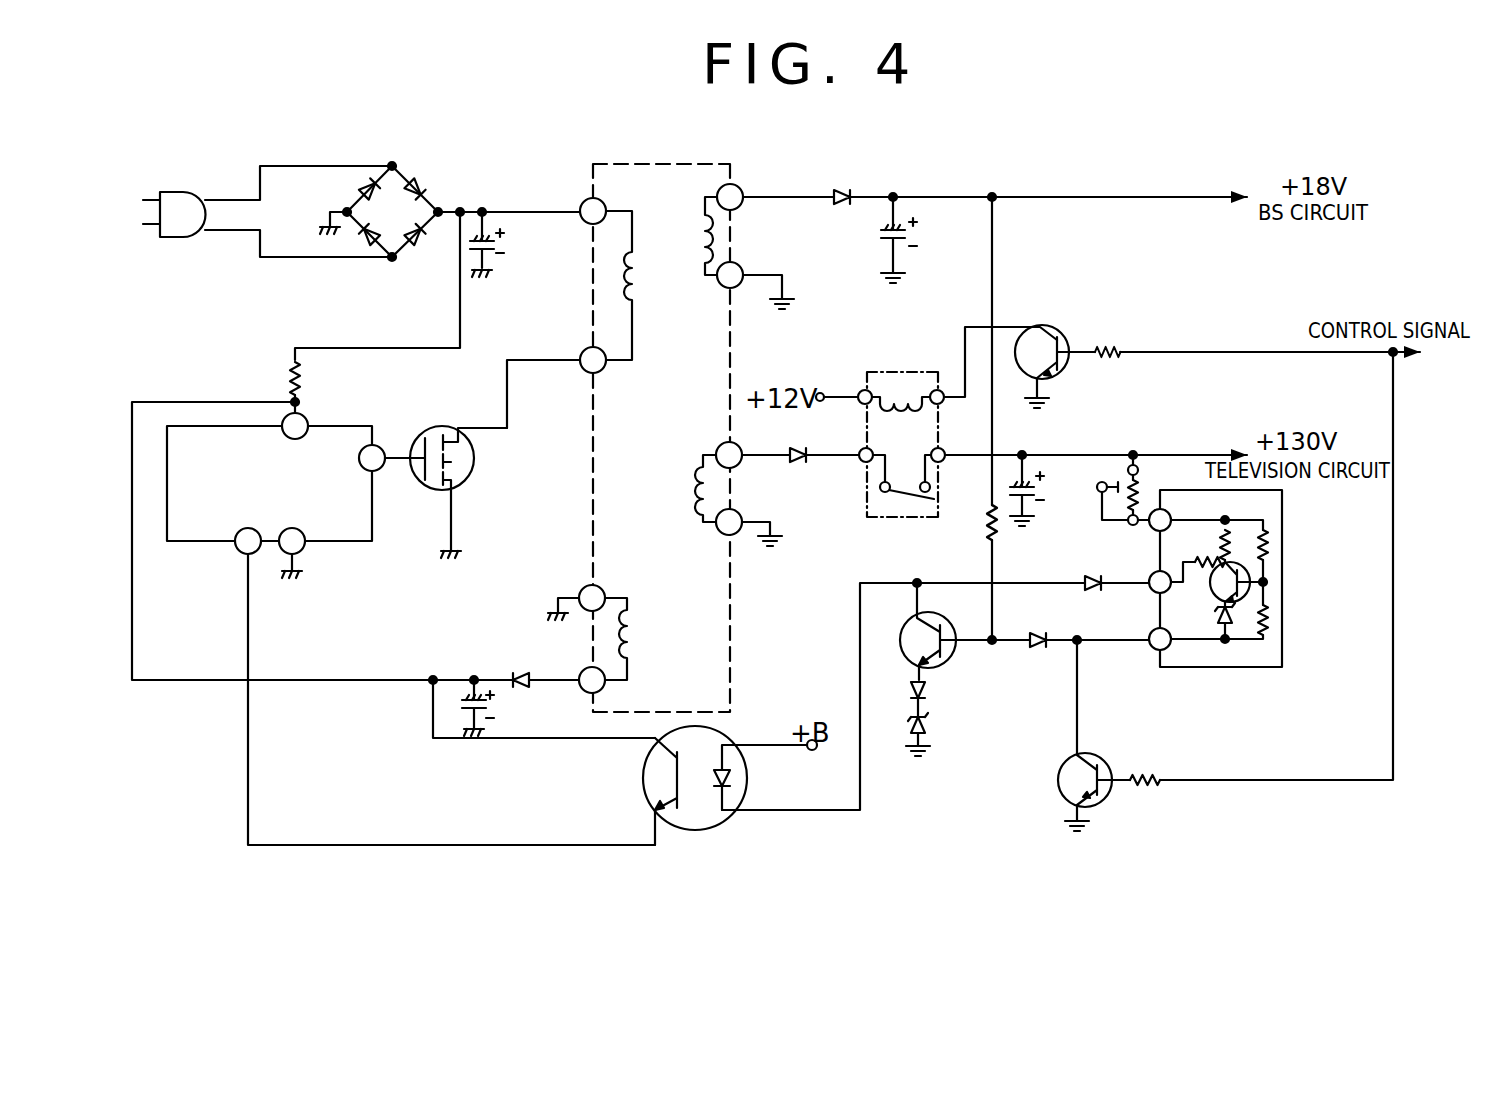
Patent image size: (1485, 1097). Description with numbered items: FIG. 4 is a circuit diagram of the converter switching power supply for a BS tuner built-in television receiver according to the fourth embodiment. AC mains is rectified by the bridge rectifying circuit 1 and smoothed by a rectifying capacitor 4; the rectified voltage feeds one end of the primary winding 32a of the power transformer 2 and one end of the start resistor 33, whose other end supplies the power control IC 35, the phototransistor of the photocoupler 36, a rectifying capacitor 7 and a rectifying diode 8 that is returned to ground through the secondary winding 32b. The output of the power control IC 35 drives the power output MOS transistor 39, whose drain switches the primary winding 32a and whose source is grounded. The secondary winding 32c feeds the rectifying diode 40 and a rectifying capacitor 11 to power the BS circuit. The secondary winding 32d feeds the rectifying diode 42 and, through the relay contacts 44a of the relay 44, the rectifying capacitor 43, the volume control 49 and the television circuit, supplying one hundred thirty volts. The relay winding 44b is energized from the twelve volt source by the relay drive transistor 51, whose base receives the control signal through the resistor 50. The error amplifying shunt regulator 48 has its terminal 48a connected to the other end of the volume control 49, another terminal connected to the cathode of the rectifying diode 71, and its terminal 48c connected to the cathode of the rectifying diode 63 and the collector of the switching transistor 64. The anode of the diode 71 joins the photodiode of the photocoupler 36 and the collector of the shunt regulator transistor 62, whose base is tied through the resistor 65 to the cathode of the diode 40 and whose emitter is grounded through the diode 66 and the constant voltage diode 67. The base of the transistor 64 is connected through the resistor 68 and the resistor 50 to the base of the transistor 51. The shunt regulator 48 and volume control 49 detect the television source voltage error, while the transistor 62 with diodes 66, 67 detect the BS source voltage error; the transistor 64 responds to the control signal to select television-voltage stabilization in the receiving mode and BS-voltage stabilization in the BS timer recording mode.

The rectifier bridge 1 is at (430, 184).
The power transformer 2 is at (670, 165).
The smoothing capacitor 4 is at (498, 239).
The capacitor 7 is at (490, 706).
The diode 8 is at (516, 672).
The capacitor 11 is at (906, 235).
The primary winding 32a is at (640, 280).
The secondary winding 32b is at (637, 650).
The secondary winding 32c is at (695, 240).
The secondary winding 32d is at (697, 485).
The start resistor 33 is at (291, 375).
The power control IC 35 is at (356, 426).
The photocoupler 36 is at (752, 722).
The power output MOS transistor 39 is at (478, 455).
The rectifying diode 40 is at (843, 188).
The rectifying diode 42 is at (798, 468).
The rectifying capacitor 43 is at (1034, 490).
The relay 44 is at (910, 368).
The relay contacts 44a is at (903, 496).
The relay winding 44b is at (897, 372).
The error amplifying shunt regulator 48 is at (1218, 601).
The terminal 48a is at (1156, 532).
The terminal 48c is at (1152, 648).
The volume control 49 is at (1140, 492).
The resistor 50 is at (1112, 346).
The relay drive transistor 51 is at (1050, 327).
The shunt regulator transistor 62 is at (910, 628).
The rectifying diode 63 is at (1050, 608).
The switching transistor 64 is at (1100, 742).
The resistor 65 is at (988, 528).
The diode 66 is at (928, 690).
The constant voltage diode 67 is at (930, 725).
The resistor 68 is at (1162, 782).
The rectifying diode 71 is at (1083, 565).